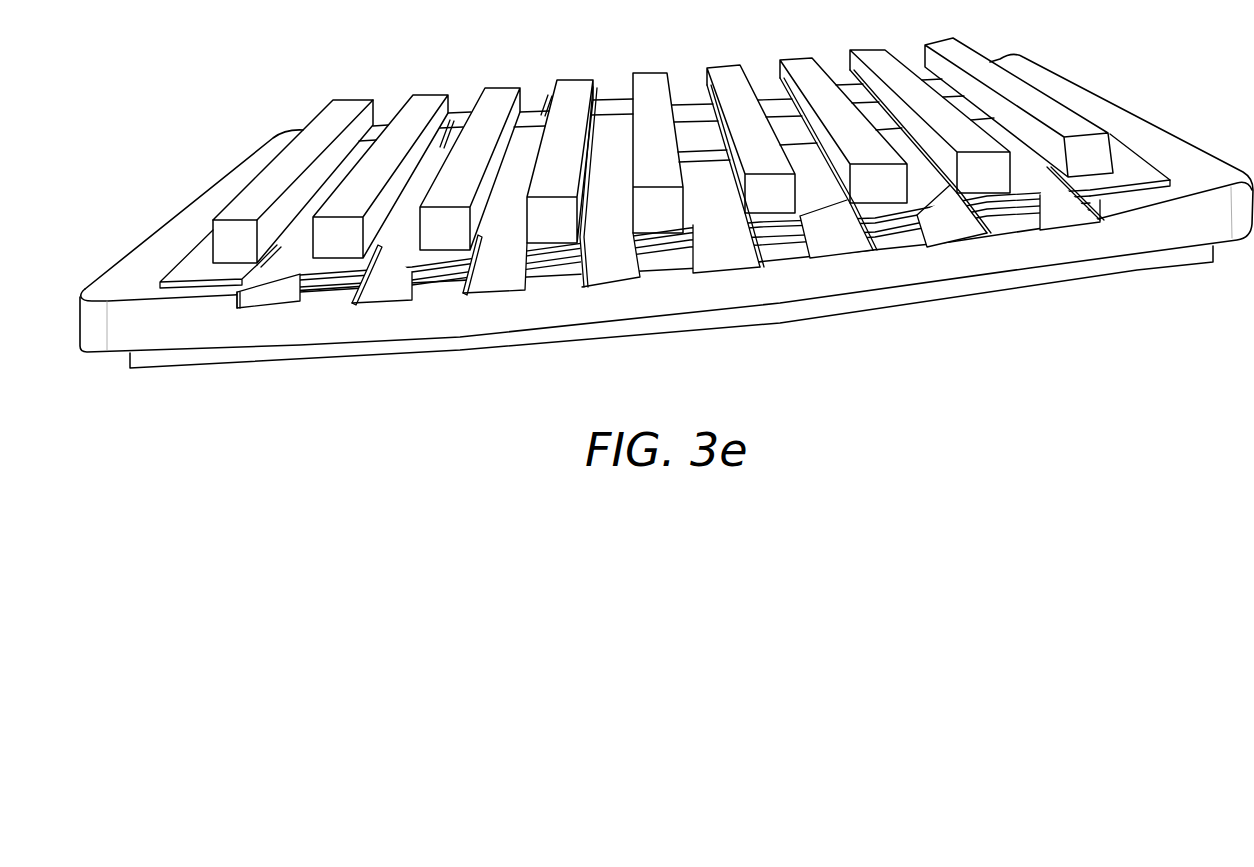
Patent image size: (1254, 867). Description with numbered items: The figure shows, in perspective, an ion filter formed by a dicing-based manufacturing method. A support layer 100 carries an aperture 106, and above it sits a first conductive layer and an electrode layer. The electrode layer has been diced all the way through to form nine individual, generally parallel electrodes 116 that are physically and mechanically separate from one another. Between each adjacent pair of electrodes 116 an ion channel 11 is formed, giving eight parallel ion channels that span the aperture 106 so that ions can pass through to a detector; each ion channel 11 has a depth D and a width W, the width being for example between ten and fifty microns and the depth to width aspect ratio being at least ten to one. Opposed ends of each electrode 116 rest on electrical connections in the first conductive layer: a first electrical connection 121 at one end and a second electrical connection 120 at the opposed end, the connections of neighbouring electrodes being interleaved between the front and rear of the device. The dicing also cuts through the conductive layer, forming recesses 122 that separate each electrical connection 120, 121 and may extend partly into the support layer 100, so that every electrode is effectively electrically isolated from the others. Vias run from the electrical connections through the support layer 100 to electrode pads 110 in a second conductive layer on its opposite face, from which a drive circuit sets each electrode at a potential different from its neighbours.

The support layer 100 is at (99, 343).
The electrode pads 110 is at (1183, 257).
The aperture 106 is at (818, 197).
The recesses 122 is at (720, 247).
The ion channel 11 is at (690, 112).
The electrodes 116 is at (355, 107).
The second electrical connection 120 is at (663, 228).
The first electrical connection 121 is at (541, 94).
The width W is at (776, 52).
The depth D is at (935, 137).